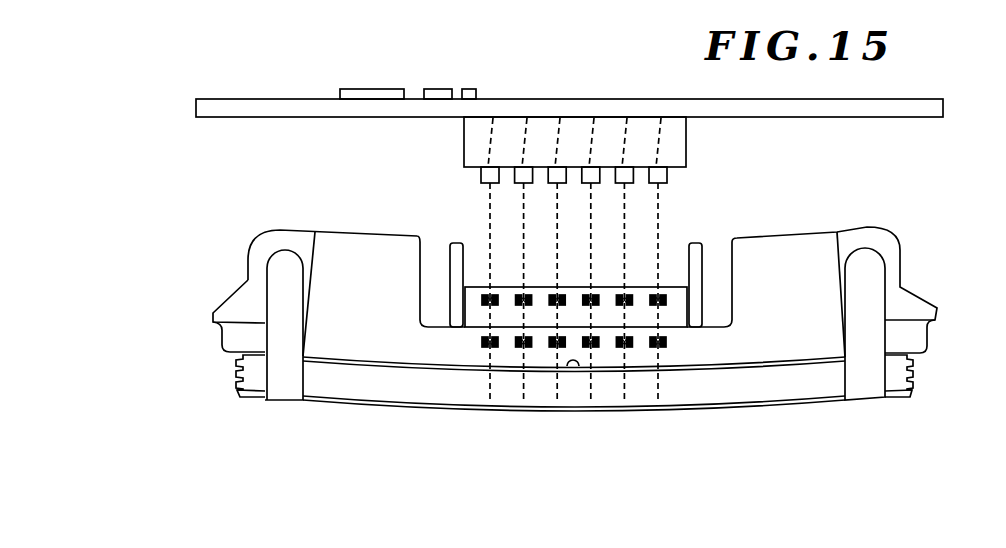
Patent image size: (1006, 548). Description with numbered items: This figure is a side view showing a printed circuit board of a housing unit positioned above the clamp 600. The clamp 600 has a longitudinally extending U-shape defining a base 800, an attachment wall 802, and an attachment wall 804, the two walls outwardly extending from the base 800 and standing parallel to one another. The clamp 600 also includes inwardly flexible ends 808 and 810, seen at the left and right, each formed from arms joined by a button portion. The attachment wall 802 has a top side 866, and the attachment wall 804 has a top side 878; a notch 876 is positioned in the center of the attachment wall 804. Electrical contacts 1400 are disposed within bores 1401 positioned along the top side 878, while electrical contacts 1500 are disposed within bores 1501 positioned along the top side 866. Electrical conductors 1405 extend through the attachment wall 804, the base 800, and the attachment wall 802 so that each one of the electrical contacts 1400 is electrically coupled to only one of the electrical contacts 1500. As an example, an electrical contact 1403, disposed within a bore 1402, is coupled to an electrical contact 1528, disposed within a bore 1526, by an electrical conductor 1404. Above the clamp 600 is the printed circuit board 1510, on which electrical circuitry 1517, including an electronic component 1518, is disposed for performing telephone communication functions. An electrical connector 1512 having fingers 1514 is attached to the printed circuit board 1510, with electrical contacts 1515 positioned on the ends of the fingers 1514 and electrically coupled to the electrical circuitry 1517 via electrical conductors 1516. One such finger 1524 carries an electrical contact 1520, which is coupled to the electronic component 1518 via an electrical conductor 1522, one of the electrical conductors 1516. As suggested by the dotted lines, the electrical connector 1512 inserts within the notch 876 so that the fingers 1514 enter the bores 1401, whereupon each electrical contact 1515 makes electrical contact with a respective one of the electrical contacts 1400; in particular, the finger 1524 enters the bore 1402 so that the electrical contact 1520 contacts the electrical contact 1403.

The clamp 600 is at (964, 240).
The base 800 is at (813, 383).
The attachment wall 802 is at (322, 283).
The attachment wall 804 is at (680, 308).
The end 808 is at (225, 376).
The end 810 is at (930, 370).
The top side 866 is at (634, 327).
The notch 876 is at (477, 270).
The top side 878 is at (678, 288).
The electrical contacts 1400 is at (475, 300).
The bores 1401 is at (475, 280).
The bore 1402 is at (530, 287).
The electrical contact 1403 is at (520, 293).
The electrical conductor 1404 is at (523, 387).
The electrical conductors 1405 is at (475, 313).
The electrical contacts 1500 is at (680, 343).
The bores 1501 is at (505, 319).
The printed circuit board 1510 is at (213, 99).
The electrical connector 1512 is at (464, 152).
The fingers 1514 is at (690, 173).
The electrical contacts 1515 is at (670, 189).
The electrical conductors 1516 is at (670, 133).
The electrical circuitry 1517 is at (440, 84).
The electronic component 1518 is at (373, 90).
The electrical contact 1520 is at (523, 183).
The electrical conductor 1522 is at (525, 138).
The finger 1524 is at (525, 181).
The bore 1526 is at (518, 348).
The electrical contact 1528 is at (522, 345).